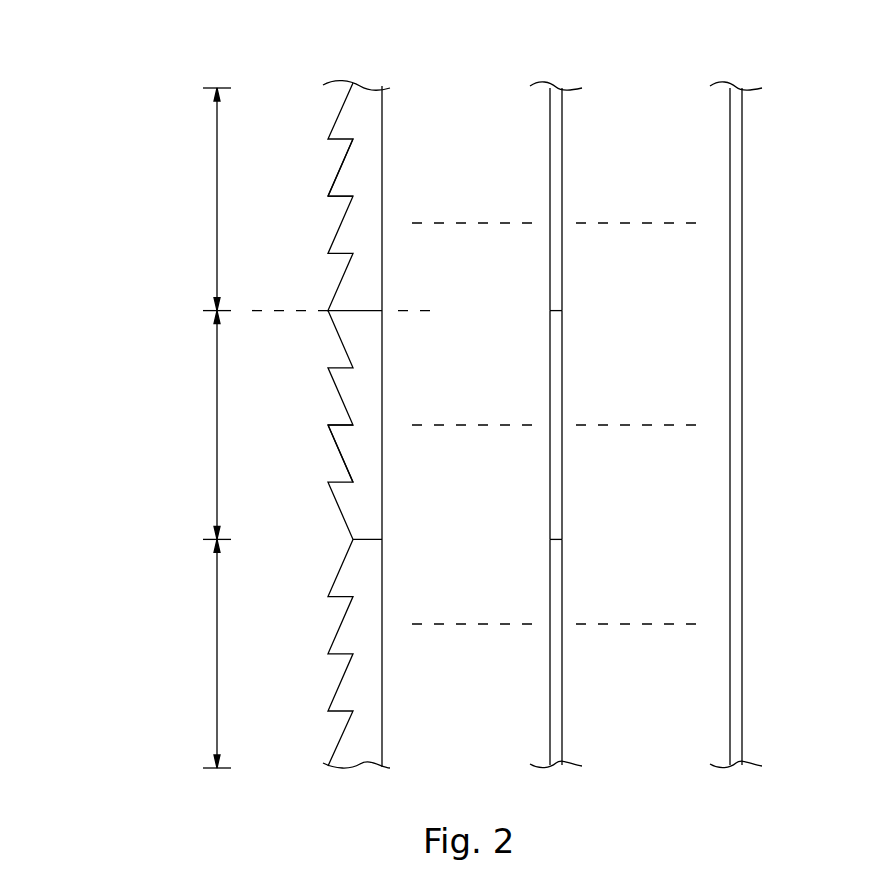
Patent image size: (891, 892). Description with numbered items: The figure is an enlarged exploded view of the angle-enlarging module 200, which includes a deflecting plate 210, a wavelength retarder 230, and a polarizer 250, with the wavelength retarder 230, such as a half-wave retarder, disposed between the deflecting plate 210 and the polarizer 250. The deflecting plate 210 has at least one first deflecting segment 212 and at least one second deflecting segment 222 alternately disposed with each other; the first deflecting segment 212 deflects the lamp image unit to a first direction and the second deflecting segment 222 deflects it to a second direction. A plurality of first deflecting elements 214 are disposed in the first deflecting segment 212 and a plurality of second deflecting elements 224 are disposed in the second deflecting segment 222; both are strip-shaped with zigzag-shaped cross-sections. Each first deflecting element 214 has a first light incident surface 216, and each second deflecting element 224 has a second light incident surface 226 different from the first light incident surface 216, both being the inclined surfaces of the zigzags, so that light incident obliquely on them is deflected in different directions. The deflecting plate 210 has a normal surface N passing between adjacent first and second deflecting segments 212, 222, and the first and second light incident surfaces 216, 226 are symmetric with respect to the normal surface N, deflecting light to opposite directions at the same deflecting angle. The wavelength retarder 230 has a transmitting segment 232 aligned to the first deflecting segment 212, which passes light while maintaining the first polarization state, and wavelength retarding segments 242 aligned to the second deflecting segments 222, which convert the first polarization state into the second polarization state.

The angle-enlarging module 200 is at (97, 56).
The deflecting plate 210 is at (375, 68).
The first deflecting segment 212 is at (205, 434).
The first deflecting element 214 is at (342, 432).
The first light incident surface 216 is at (330, 452).
The second deflecting segment 222 is at (205, 212).
The second deflecting element 224 is at (340, 192).
The second light incident surface 226 is at (333, 168).
The wavelength retarder 230 is at (596, 401).
The transmitting segment 232 is at (555, 506).
The wavelength retarding segment 242 is at (555, 265).
The polarizer 250 is at (739, 68).
The normal surface N is at (409, 303).